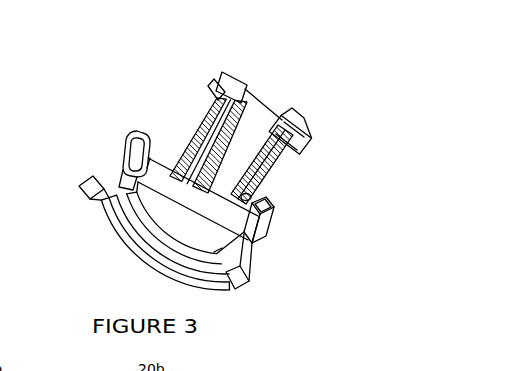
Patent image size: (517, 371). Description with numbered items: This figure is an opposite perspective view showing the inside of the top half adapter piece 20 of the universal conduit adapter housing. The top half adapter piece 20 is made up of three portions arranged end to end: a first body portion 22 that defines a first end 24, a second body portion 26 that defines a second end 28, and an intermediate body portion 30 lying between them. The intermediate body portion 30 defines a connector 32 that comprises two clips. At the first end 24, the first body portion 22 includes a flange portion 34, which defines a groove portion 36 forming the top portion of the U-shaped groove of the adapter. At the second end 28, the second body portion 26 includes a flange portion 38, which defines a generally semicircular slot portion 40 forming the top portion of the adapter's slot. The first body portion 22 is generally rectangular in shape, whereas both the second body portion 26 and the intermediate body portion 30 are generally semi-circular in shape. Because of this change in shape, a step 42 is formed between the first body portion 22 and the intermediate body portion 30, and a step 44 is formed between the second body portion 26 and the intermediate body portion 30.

The top half adapter piece 20 is at (157, 96).
The first body portion 22 is at (240, 153).
The first end 24 is at (274, 84).
The second body portion 26 is at (169, 234).
The second end 28 is at (113, 253).
The intermediate body portion 30 is at (196, 216).
The connector 32 is at (119, 136).
The flange portion 34 is at (309, 114).
The groove portion 36 is at (313, 143).
The flange portion 38 is at (97, 209).
The slot portion 40 is at (238, 279).
The step 42 is at (251, 195).
The step 44 is at (220, 250).